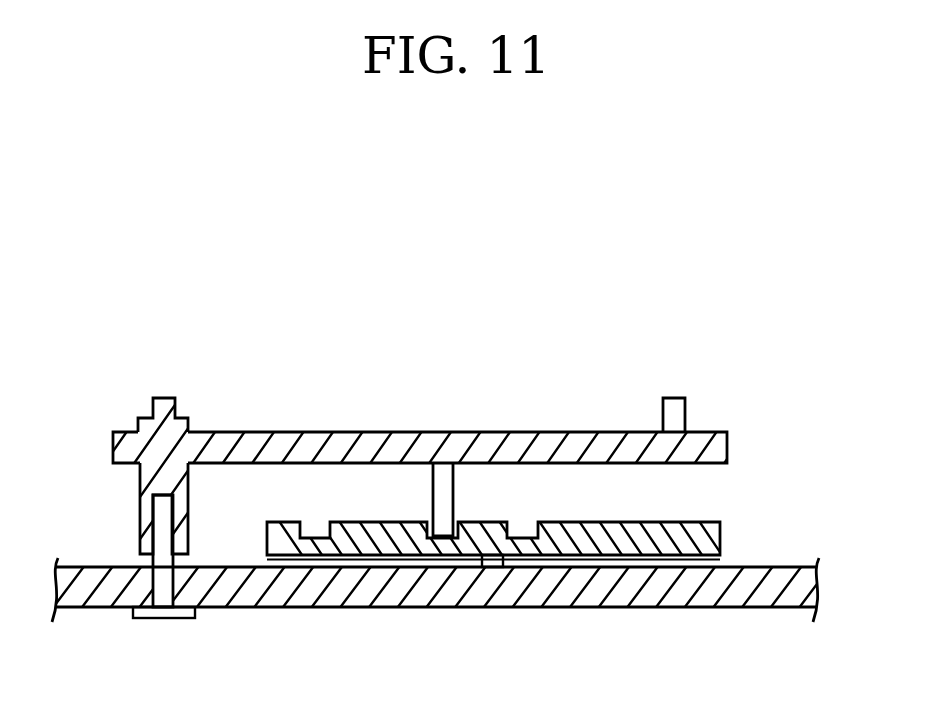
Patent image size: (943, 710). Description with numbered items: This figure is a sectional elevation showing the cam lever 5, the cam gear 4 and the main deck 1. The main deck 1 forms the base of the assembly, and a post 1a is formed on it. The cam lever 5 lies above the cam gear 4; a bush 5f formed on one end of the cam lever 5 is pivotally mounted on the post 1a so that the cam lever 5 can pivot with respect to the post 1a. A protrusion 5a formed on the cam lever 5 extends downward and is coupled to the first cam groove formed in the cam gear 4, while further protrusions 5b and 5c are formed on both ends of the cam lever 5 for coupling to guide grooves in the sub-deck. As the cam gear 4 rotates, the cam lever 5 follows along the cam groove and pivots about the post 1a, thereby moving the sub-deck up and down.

The main deck 1 is at (88, 597).
The post 1a is at (160, 527).
The cam gear 4 is at (728, 515).
The cam lever 5 is at (508, 427).
The protrusion 5a is at (434, 493).
The protrusion 5b is at (673, 407).
The protrusion 5c is at (153, 402).
The bush 5f is at (140, 481).